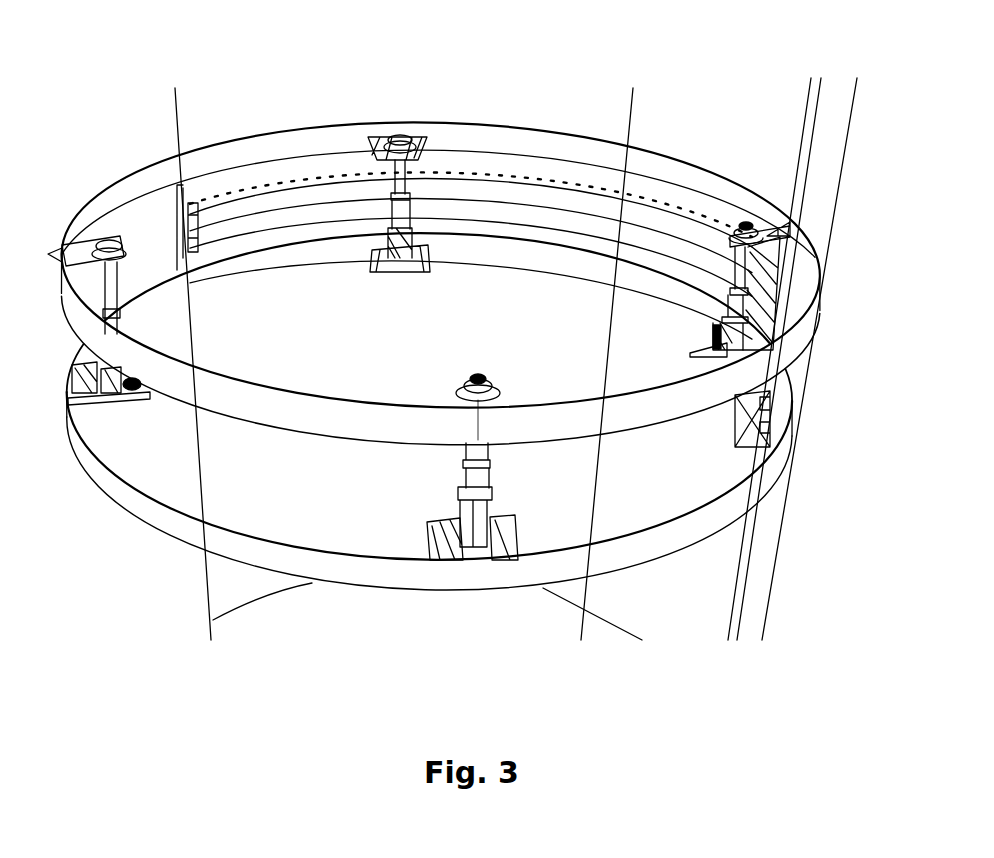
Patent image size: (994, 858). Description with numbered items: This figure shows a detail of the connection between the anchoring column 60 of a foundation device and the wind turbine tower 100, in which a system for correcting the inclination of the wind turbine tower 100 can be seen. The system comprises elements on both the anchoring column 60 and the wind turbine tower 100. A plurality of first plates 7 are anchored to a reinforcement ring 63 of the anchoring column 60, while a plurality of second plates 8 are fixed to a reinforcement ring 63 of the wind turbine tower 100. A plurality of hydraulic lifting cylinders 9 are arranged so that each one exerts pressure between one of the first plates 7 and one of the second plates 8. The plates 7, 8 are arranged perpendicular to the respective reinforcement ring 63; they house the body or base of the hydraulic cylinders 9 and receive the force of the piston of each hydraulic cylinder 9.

The first plate 7 is at (132, 396).
The second plate 8 is at (66, 246).
The hydraulic lifting cylinder 9 is at (480, 483).
The anchoring column 60 is at (758, 575).
The reinforcement ring 63 is at (322, 418).
The wind turbine tower 100 is at (830, 162).